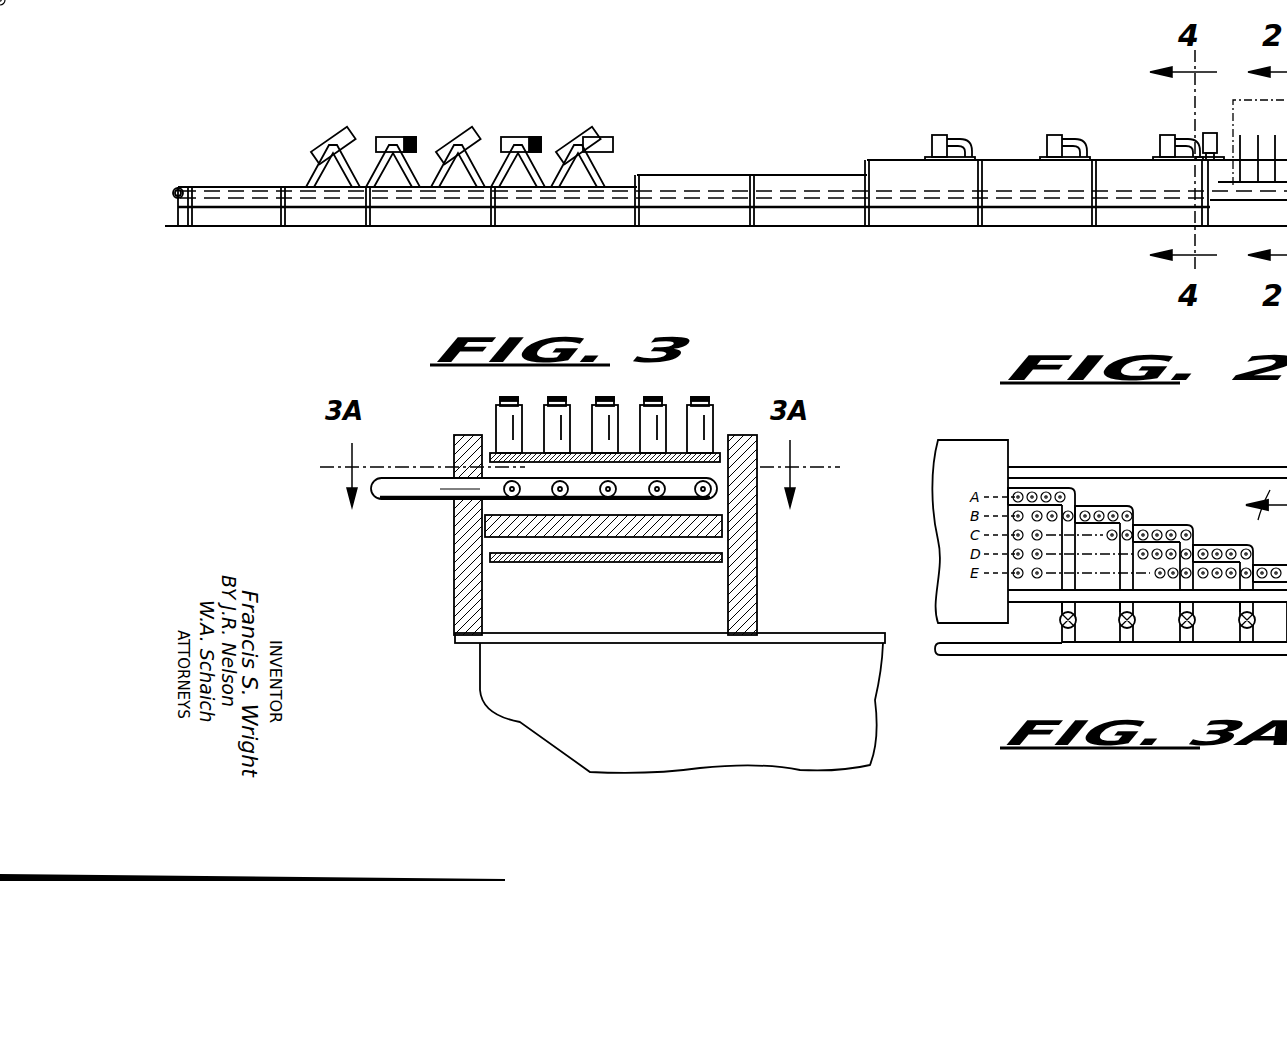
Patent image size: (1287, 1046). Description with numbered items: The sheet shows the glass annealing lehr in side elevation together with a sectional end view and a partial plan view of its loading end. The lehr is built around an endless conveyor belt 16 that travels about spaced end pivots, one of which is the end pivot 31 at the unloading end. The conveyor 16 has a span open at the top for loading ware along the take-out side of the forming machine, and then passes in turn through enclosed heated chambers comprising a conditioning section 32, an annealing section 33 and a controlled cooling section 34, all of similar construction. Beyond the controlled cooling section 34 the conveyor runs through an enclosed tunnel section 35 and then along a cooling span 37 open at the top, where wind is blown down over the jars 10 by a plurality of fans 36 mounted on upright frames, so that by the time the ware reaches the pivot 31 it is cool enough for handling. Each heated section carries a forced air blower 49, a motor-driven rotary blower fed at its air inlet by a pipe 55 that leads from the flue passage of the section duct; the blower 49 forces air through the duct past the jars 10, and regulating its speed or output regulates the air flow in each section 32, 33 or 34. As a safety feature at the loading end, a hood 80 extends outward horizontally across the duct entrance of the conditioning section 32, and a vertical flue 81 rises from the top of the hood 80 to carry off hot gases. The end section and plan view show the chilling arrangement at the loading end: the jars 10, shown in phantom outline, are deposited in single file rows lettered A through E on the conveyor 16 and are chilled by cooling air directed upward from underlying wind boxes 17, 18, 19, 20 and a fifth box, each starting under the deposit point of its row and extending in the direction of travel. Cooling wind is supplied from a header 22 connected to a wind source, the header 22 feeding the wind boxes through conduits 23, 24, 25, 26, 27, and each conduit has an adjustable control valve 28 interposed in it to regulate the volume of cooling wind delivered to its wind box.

In FIG. 3, the jars 10 is at (545, 435).
In FIG. 2, the conveyor belt 16 is at (258, 186).
In FIG. 3, the conveyor belt 16 is at (720, 450).
In FIG. 3A, the conveyor belt 16 is at (1240, 478).
In FIG. 3A, the wind box 17 is at (1035, 488).
In FIG. 3A, the wind box 18 is at (1097, 506).
In FIG. 3A, the wind box 19 is at (1155, 525).
In FIG. 3A, the wind box 20 is at (1215, 545).
In FIG. 3A, the header 22 is at (1013, 656).
In FIG. 3, the conduit 23 is at (686, 498).
In FIG. 3A, the conduit 23 is at (1064, 606).
In FIG. 3, the conduit 24 is at (627, 498).
In FIG. 3A, the conduit 24 is at (1122, 606).
In FIG. 3, the conduit 25 is at (578, 498).
In FIG. 3A, the conduit 25 is at (1182, 606).
In FIG. 3, the conduit 26 is at (530, 498).
In FIG. 3A, the conduit 26 is at (1242, 606).
In FIG. 3, the conduit 27 is at (403, 500).
In FIG. 3A, the conduit 27 is at (1286, 608).
In FIG. 3A, the adjustable control valve 28 is at (1122, 628).
In FIG. 2, the end pivot 31 is at (205, 150).
In FIG. 2, the conditioning section 32 is at (1127, 150).
In FIG. 3A, the conditioning section 32 is at (1000, 435).
In FIG. 2, the annealing section 33 is at (1028, 150).
In FIG. 2, the controlled cooling section 34 is at (900, 152).
In FIG. 2, the tunnel section 35 is at (772, 165).
In FIG. 2, the fans 36 is at (395, 140).
In FIG. 2, the cooling span 37 is at (625, 170).
In FIG. 2, the forced air blower 49 is at (940, 134).
In FIG. 2, the pipe 55 is at (966, 140).
In FIG. 2, the hood 80 is at (1222, 180).
In FIG. 2, the vertical flue 81 is at (1212, 132).